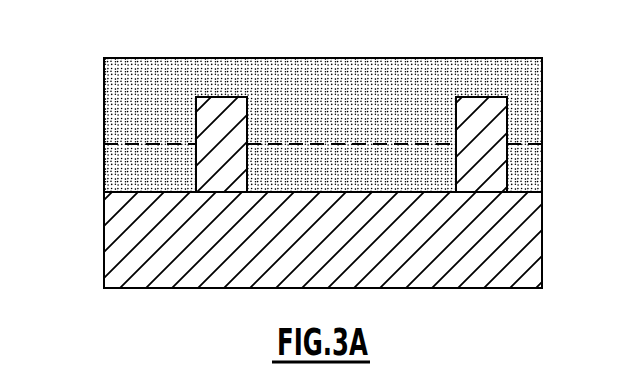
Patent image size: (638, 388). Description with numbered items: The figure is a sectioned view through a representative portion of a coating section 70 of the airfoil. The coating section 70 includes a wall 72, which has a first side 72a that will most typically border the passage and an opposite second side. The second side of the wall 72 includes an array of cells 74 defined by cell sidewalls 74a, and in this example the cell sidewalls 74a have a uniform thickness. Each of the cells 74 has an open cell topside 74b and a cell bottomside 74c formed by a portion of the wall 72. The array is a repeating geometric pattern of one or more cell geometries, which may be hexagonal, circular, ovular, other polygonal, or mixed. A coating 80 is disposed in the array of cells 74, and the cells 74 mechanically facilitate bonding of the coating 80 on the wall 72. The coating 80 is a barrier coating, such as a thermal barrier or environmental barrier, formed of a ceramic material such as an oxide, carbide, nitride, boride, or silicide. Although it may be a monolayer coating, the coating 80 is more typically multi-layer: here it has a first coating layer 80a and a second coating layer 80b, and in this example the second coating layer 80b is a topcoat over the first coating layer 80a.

The coating section 70 is at (69, 246).
The wall 72 is at (182, 302).
The first side 72a is at (446, 290).
The cells 74 is at (424, 107).
The cell sidewalls 74a is at (248, 105).
The open cell topside 74b is at (412, 97).
The cell bottomside 74c is at (525, 192).
The coating 80 is at (287, 96).
The first coating layer 80a is at (112, 167).
The second coating layer 80b is at (110, 77).